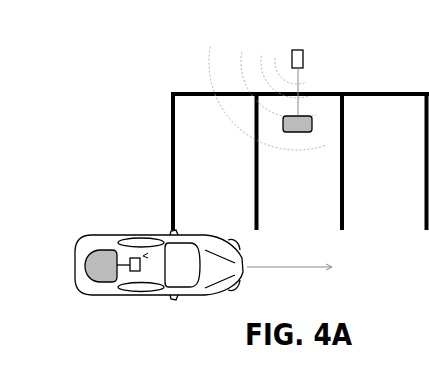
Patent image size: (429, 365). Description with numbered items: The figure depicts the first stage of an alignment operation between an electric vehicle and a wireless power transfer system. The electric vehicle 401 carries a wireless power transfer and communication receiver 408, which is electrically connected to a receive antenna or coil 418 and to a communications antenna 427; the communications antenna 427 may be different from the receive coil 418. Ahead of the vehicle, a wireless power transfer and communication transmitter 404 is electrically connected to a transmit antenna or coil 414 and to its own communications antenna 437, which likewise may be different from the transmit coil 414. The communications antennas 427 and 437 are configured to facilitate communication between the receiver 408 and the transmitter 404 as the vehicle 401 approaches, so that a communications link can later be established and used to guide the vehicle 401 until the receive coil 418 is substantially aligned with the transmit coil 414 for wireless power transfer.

The electric vehicle 401 is at (218, 294).
The wireless power transfer and communication transmitter 404 is at (303, 61).
The wireless power transfer and communication receiver 408 is at (134, 271).
The transmit antenna or coil 414 is at (312, 126).
The receive antenna or coil 418 is at (100, 268).
The communications antenna 427 is at (136, 258).
The communications antenna 437 is at (292, 51).